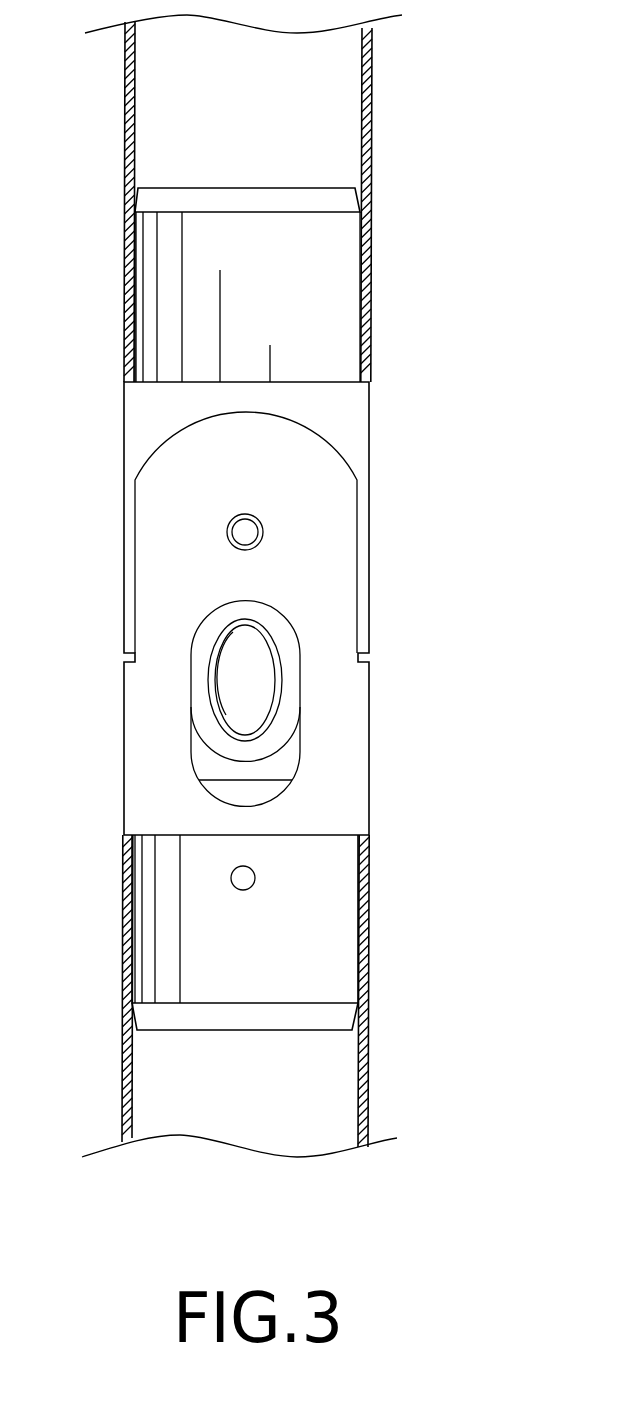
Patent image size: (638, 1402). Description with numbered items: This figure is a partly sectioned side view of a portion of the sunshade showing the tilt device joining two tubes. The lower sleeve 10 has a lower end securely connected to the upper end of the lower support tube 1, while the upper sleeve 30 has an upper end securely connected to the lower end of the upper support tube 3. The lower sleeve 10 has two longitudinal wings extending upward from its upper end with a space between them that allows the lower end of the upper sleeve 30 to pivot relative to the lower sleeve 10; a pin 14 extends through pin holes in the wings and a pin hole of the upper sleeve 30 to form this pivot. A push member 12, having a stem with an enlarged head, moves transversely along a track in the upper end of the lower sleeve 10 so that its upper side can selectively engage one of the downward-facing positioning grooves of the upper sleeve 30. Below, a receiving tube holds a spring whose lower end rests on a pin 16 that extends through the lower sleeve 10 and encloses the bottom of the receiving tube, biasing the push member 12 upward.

The lower support tube 1 is at (368, 1097).
The upper support tube 3 is at (372, 116).
The lower sleeve 10 is at (248, 978).
The push member 12 is at (257, 697).
The pin 14 is at (245, 532).
The pin 16 is at (243, 878).
The upper sleeve 30 is at (327, 298).